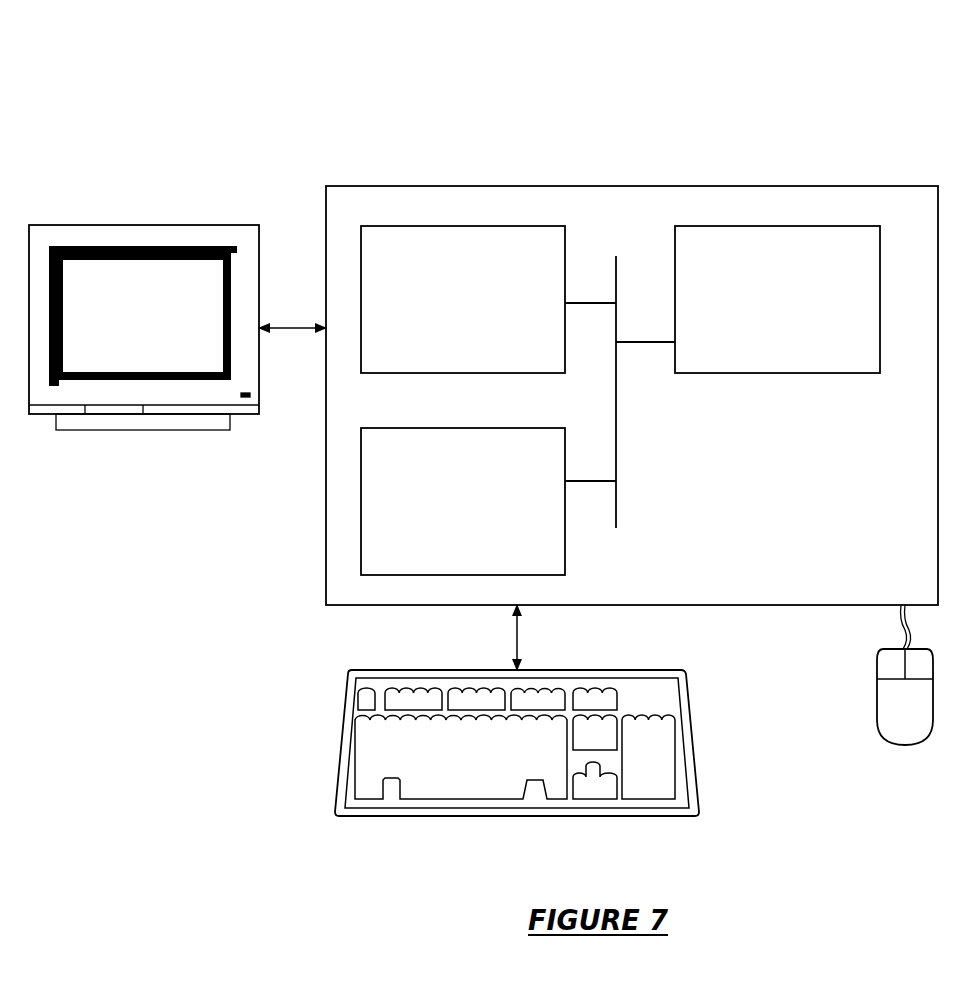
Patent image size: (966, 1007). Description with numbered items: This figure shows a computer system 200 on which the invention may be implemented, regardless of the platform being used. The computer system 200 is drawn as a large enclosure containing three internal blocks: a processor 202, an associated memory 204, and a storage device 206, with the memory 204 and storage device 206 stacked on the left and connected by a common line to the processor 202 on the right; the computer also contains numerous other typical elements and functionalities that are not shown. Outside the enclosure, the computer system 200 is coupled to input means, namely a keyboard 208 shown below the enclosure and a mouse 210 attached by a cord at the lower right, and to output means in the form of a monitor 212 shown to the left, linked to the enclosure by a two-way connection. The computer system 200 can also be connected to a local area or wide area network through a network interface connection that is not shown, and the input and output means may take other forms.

The computer system 200 is at (822, 75).
The processor 202 is at (774, 311).
The associated memory 204 is at (444, 311).
The storage device 206 is at (440, 512).
The keyboard 208 is at (434, 779).
The mouse 210 is at (886, 717).
The monitor 212 is at (124, 331).